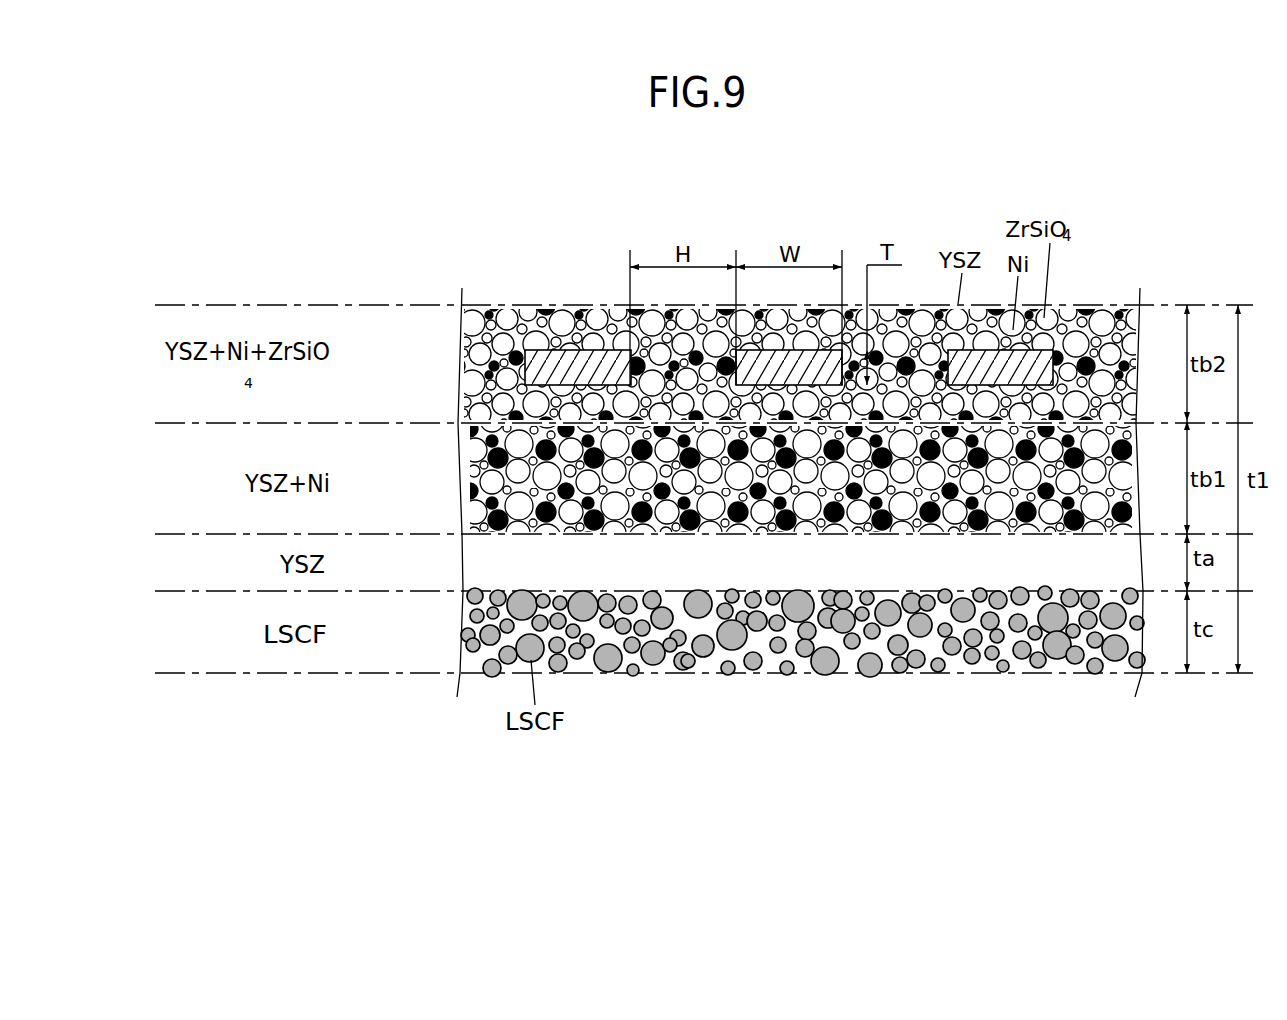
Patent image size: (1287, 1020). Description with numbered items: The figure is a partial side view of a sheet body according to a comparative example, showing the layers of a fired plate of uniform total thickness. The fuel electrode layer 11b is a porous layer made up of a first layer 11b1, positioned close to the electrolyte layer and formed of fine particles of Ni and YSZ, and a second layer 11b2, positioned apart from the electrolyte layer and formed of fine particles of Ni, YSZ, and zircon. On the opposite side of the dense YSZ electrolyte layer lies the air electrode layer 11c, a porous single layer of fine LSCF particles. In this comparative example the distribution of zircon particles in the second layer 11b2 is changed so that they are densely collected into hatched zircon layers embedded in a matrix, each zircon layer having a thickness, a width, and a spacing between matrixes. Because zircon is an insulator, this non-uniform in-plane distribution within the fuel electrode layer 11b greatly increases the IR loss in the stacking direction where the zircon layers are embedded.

The fuel electrode layer 11b is at (724, 420).
The first layer 11b1 is at (465, 483).
The second layer 11b2 is at (460, 375).
The air electrode layer 11c is at (465, 633).